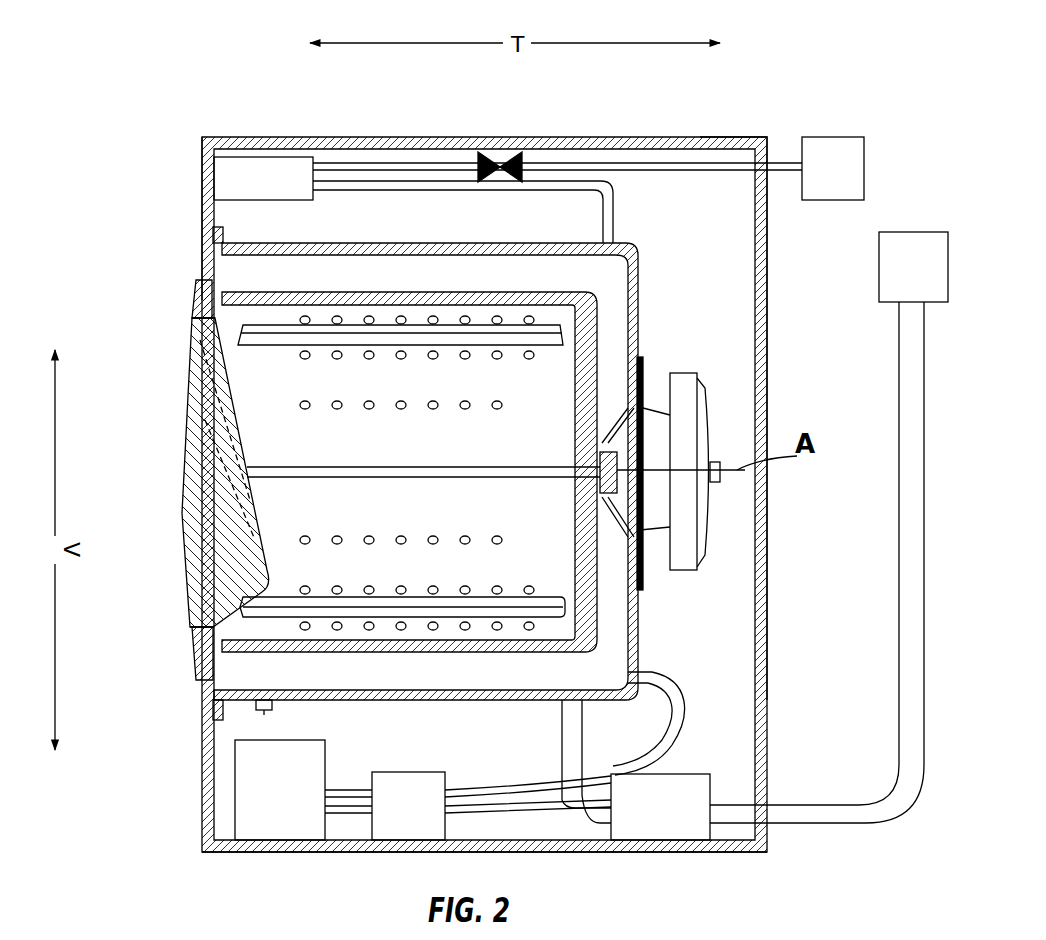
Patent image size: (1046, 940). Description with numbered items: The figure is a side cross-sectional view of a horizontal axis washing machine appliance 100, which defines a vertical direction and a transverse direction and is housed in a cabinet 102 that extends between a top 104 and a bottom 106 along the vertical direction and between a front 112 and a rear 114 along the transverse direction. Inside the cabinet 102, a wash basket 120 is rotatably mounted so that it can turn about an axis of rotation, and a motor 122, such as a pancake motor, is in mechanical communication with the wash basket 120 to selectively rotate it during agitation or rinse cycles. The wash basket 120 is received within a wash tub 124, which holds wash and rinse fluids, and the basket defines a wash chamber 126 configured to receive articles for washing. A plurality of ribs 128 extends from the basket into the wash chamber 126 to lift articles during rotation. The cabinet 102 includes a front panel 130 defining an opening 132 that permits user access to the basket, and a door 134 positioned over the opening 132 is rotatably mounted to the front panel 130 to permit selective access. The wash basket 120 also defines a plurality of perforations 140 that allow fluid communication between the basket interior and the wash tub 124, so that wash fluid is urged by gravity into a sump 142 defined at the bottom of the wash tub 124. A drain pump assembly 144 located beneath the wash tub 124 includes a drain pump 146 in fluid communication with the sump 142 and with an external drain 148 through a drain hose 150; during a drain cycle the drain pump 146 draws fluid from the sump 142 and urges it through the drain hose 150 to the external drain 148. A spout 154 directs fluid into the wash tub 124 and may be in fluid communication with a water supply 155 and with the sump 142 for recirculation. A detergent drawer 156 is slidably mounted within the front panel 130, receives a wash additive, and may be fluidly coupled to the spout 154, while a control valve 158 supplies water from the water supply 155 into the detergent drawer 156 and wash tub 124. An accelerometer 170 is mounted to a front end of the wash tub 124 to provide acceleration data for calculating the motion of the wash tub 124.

The washing machine appliance 100 is at (230, 75).
The cabinet 102 is at (770, 482).
The top 104 is at (768, 140).
The bottom 106 is at (797, 843).
The front 112 is at (195, 140).
The rear 114 is at (771, 300).
The wash basket 120 is at (402, 296).
The motor 122 is at (690, 410).
The wash tub 124 is at (641, 312).
The wash chamber 126 is at (268, 425).
The ribs 128 is at (340, 467).
The front panel 130 is at (205, 680).
The opening 132 is at (232, 325).
The door 134 is at (200, 528).
The perforations 140 is at (468, 410).
The sump 142 is at (600, 660).
The drain pump assembly 144 is at (728, 727).
The drain pump 146 is at (676, 820).
The external drain 148 is at (931, 281).
The drain hose 150 is at (898, 608).
The spout 154 is at (615, 218).
The water supply 155 is at (851, 186).
The detergent drawer 156 is at (268, 180).
The control valve 158 is at (500, 150).
The accelerometer 170 is at (264, 715).